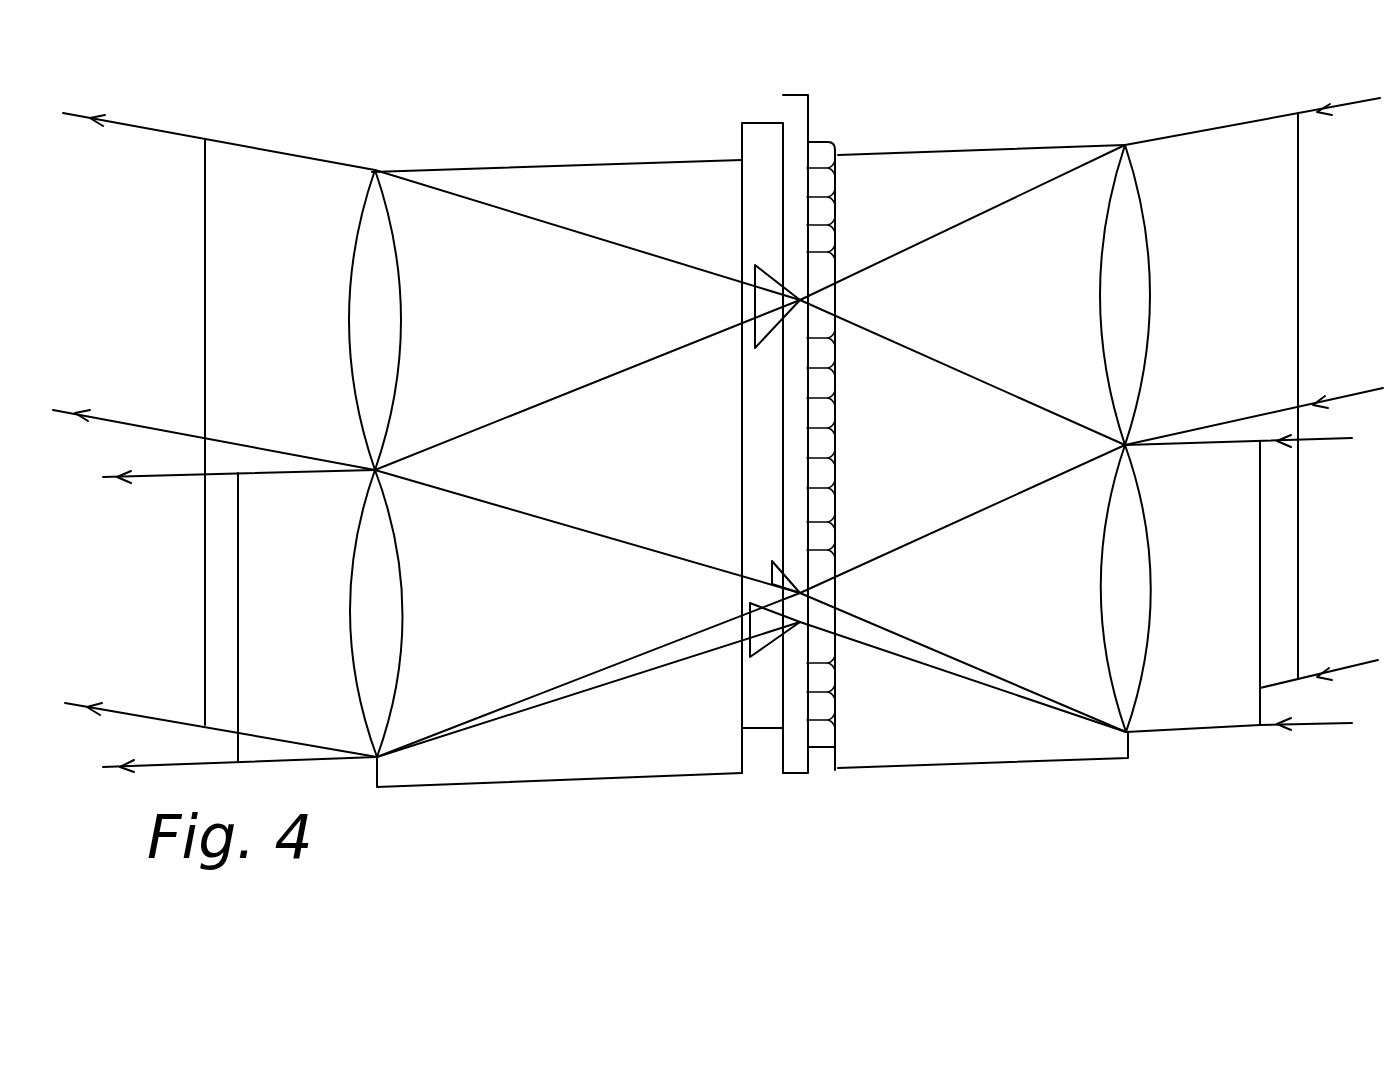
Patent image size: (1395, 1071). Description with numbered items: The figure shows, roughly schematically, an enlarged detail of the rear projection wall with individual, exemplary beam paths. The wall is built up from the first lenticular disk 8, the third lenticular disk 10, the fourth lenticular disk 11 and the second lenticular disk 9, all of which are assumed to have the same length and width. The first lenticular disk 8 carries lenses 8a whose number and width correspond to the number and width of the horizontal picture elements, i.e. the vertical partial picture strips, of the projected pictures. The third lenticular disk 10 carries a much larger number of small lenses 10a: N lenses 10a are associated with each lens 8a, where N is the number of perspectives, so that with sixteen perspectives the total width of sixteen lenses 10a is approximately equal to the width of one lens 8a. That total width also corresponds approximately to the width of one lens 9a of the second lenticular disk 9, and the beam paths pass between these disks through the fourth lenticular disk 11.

The first lenticular disk 8 is at (1005, 173).
The lens of the first lenticular disk 8a is at (1130, 145).
The second lenticular disk 9 is at (603, 192).
The lens of the second lenticular disk 9a is at (375, 230).
The third lenticular disk 10 is at (798, 125).
The lens of the third lenticular disk 10a is at (840, 165).
The fourth lenticular disk 11 is at (765, 157).